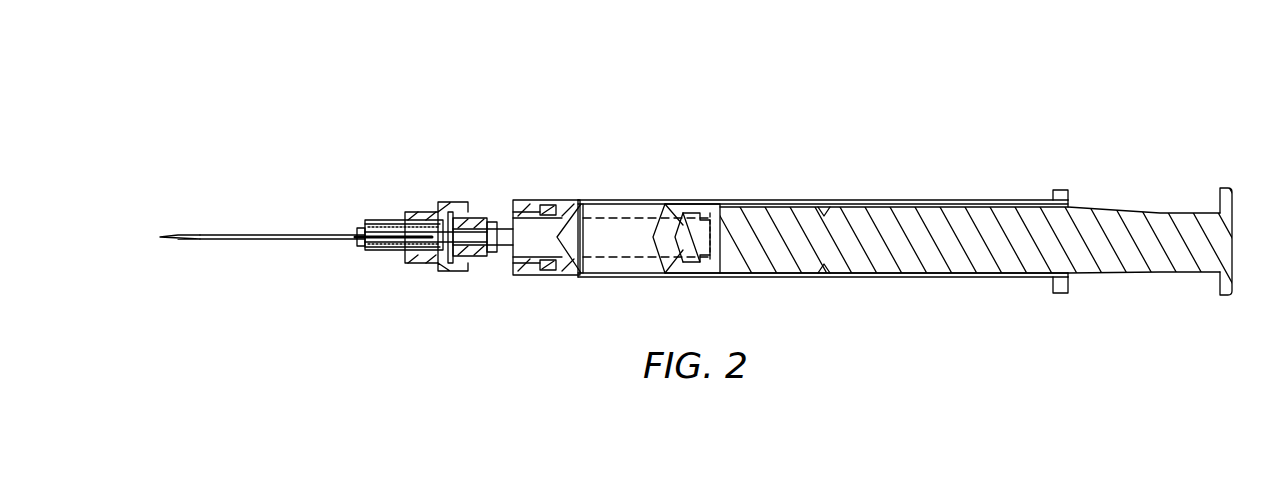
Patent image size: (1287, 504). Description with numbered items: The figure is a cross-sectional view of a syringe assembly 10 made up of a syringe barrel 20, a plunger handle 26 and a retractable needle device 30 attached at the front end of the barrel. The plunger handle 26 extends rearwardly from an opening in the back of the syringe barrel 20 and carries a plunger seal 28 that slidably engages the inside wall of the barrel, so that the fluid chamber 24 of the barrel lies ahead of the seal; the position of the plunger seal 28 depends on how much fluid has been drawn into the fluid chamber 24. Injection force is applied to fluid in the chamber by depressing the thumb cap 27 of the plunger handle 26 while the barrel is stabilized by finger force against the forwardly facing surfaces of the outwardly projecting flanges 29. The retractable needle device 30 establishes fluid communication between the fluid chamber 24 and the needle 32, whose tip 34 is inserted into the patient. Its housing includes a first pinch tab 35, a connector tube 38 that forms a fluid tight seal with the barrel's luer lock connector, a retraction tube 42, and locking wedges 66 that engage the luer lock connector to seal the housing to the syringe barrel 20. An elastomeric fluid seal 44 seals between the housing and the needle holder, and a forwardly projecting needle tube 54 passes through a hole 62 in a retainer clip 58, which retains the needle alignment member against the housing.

The syringe assembly 10 is at (243, 53).
The syringe barrel 20 is at (970, 122).
The fluid chamber 24 is at (617, 205).
The plunger handle 26 is at (1150, 214).
The thumb cap 27 is at (1221, 192).
The plunger seal 28 is at (671, 206).
The outwardly projecting flanges 29 is at (1057, 189).
The retractable needle device 30 is at (503, 115).
The needle 32 is at (293, 236).
The tip 34 is at (172, 236).
The first pinch tab 35 is at (416, 262).
The connector tube 38 is at (493, 257).
The retraction tube 42 is at (637, 257).
The fluid seal 44 is at (473, 228).
The needle tube 54 is at (383, 252).
The retainer clip 58 is at (438, 211).
The hole 62 is at (462, 210).
The locking wedges 66 is at (548, 210).